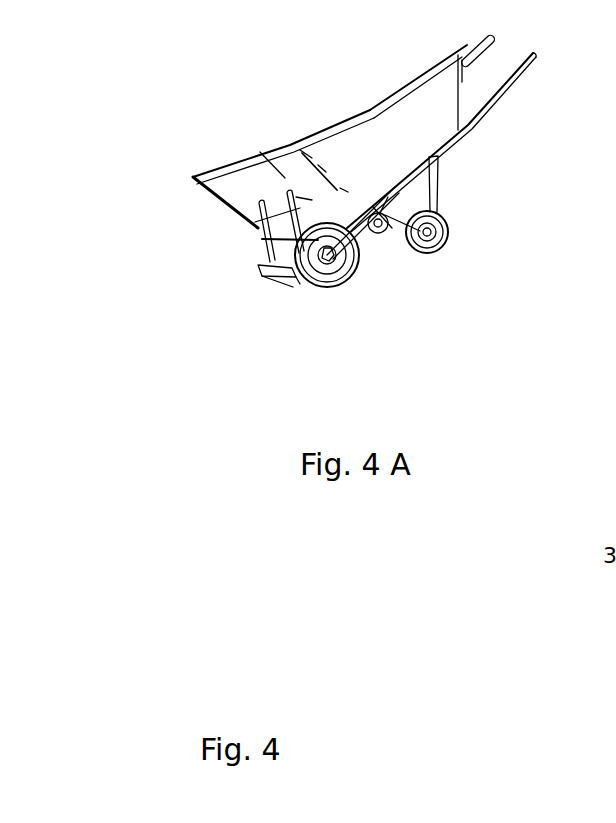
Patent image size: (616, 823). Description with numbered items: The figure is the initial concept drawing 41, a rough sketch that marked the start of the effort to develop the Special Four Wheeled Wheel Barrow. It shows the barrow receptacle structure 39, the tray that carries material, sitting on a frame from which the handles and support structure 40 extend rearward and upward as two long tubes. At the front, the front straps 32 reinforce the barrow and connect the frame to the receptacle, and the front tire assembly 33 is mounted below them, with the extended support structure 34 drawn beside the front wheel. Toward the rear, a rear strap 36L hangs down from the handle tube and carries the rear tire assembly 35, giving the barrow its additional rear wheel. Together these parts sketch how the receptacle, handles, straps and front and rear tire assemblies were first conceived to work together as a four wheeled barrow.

The barrow receptacle structure 39 is at (342, 143).
The handles and support structure 40 is at (488, 105).
The rear strap 36L is at (432, 193).
The rear tire assembly 35 is at (433, 250).
The front straps 32 is at (260, 238).
The support structure (extended) 34 is at (262, 268).
The front tire assembly 33 is at (290, 281).
The initial concept drawing 41 is at (265, 407).